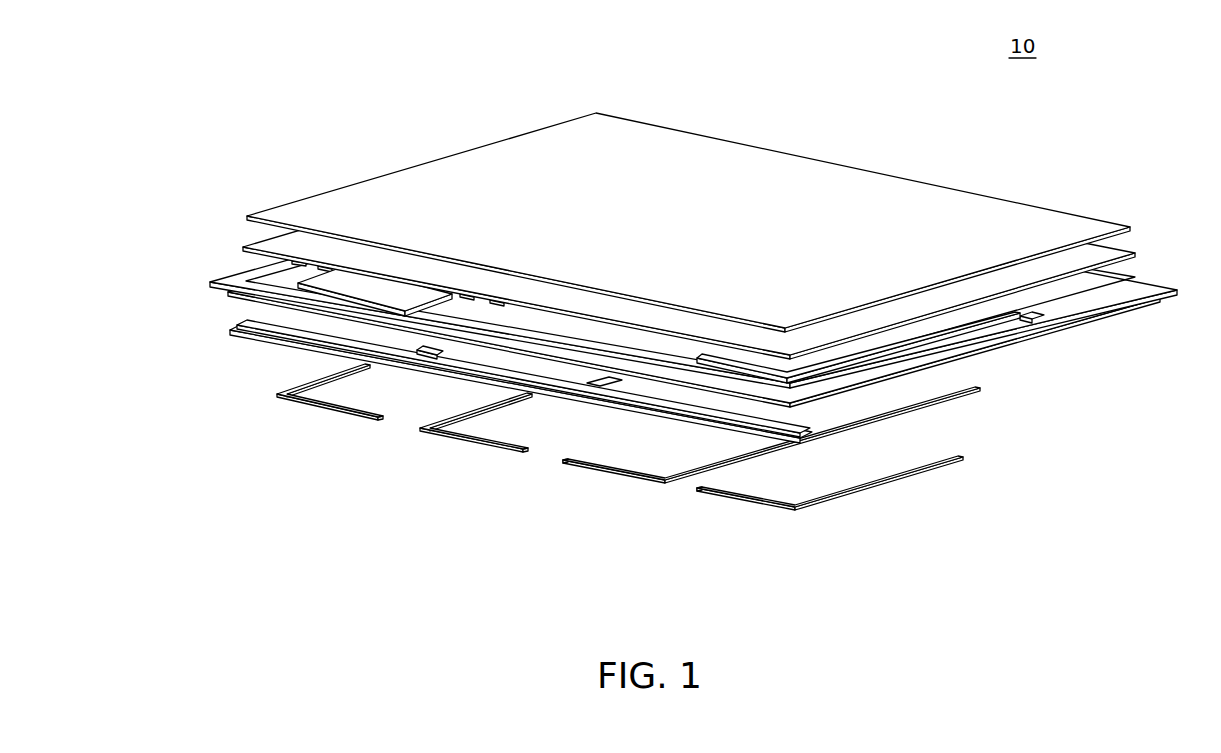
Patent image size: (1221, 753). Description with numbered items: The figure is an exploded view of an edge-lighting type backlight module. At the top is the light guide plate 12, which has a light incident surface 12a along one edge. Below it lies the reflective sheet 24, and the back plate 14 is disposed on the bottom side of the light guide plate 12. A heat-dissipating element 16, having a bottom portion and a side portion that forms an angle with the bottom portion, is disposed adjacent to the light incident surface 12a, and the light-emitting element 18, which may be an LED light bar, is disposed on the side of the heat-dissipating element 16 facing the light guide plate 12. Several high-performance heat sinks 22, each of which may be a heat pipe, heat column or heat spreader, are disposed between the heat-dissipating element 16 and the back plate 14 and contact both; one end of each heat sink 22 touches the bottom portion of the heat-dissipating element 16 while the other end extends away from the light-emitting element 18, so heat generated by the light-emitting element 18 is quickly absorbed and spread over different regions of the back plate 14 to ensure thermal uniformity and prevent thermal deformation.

The light guide plate 12 is at (688, 208).
The light incident surface 12a is at (530, 272).
The reflective sheet 24 is at (270, 235).
The light-emitting element 18 is at (243, 247).
The heat-dissipating element 16 is at (267, 320).
The back plate 14 is at (323, 297).
The high-performance heat sink 22 is at (473, 445).